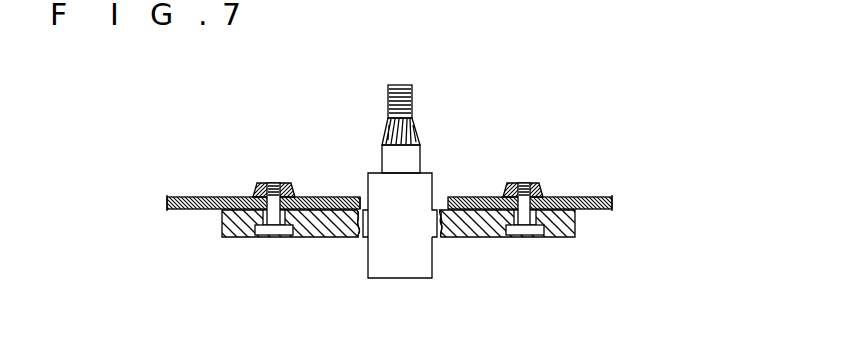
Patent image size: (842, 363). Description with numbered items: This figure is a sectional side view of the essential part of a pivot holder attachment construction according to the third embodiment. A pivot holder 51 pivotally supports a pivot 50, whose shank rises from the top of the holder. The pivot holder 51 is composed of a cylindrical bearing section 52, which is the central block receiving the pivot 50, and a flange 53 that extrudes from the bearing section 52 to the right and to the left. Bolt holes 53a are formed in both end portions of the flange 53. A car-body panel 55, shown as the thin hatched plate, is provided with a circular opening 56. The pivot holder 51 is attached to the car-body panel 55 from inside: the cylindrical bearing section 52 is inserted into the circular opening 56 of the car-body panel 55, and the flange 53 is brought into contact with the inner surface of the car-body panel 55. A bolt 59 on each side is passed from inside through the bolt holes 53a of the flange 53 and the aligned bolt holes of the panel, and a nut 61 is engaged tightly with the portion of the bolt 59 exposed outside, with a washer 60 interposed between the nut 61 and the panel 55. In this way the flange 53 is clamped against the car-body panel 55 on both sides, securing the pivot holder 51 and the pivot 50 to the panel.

The pivot 50 is at (422, 152).
The pivot holder 51 is at (361, 262).
The cylindrical bearing section 52 is at (433, 265).
The flange 53 is at (222, 215).
The bolt hole 53a is at (356, 292).
The car-body panel 55 is at (582, 197).
The circular opening 56 is at (361, 191).
The bolt 59 is at (275, 237).
The washer 60 is at (252, 193).
The nut 61 is at (257, 183).